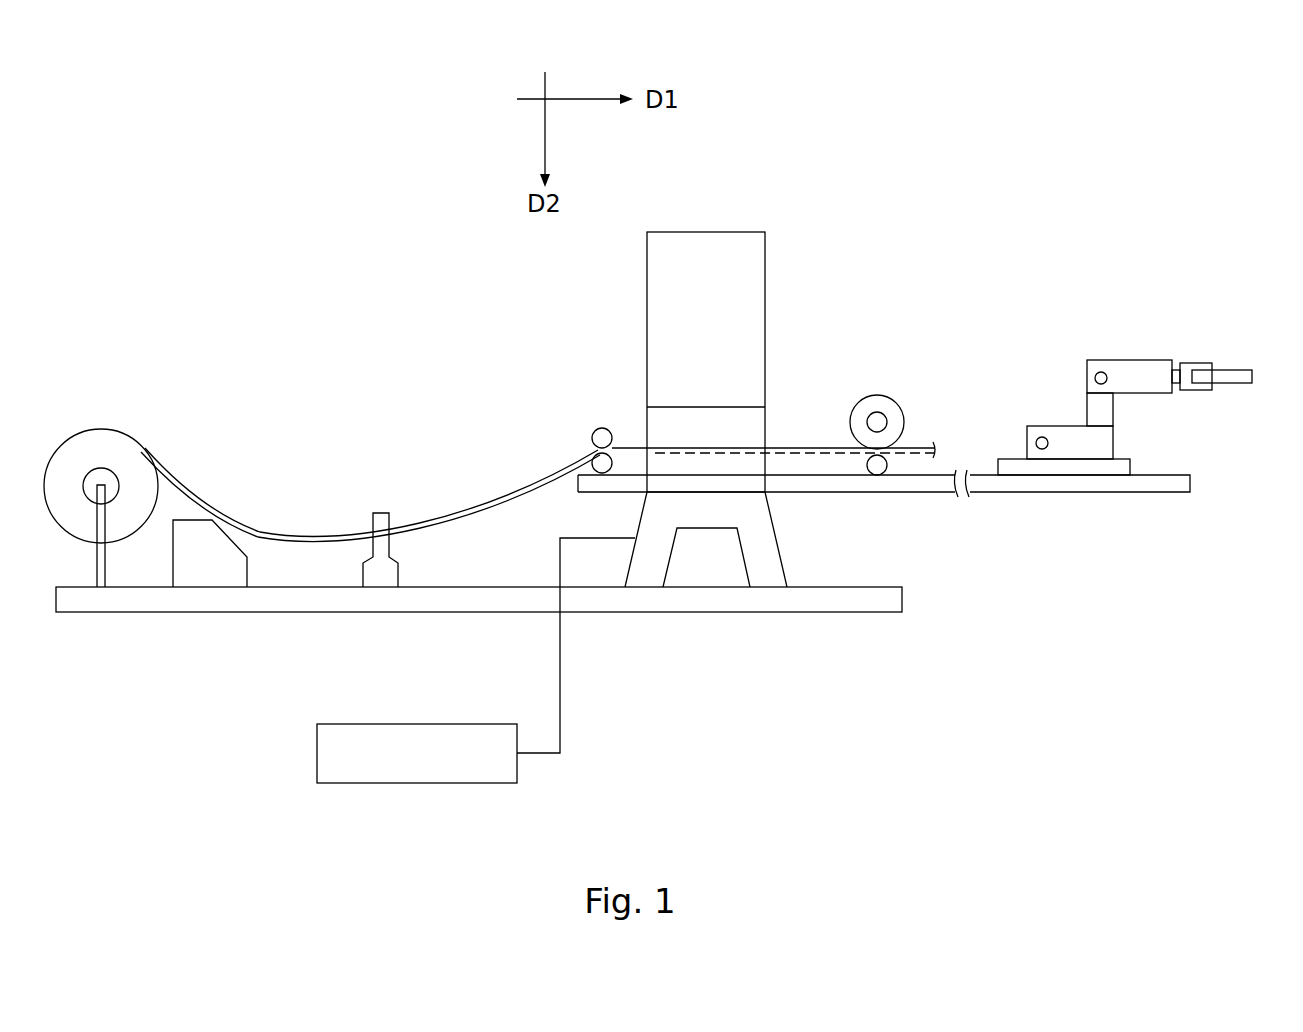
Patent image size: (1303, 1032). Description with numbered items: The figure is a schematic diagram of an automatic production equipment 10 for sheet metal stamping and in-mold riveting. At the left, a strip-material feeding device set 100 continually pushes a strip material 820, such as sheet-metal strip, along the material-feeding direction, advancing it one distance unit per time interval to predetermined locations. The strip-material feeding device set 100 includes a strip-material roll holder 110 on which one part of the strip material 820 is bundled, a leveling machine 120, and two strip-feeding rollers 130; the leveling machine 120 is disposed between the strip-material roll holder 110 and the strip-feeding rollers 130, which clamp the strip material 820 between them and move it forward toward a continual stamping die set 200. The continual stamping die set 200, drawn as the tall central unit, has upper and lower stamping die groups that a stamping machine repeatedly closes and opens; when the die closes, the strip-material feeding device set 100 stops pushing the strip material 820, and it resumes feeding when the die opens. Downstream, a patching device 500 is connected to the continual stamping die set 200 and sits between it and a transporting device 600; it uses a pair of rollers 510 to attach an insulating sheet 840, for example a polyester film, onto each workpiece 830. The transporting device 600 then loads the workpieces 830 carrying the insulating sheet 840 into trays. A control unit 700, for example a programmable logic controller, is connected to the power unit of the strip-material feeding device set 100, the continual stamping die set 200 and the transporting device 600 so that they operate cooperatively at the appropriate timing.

The automatic production equipment 10 is at (102, 50).
The strip-material feeding device set 100 is at (230, 333).
The strip-material roll holder 110 is at (118, 443).
The leveling machine 120 is at (243, 535).
The strip-feeding rollers 130 is at (592, 436).
The continual stamping die set 200 is at (753, 428).
The patching device 500 is at (788, 323).
The rollers 510 is at (877, 420).
The transporting device 600 is at (1161, 356).
The control unit 700 is at (317, 750).
The strip material 820 is at (280, 538).
The workpiece 830 is at (1225, 378).
The insulating sheet 840 is at (858, 412).